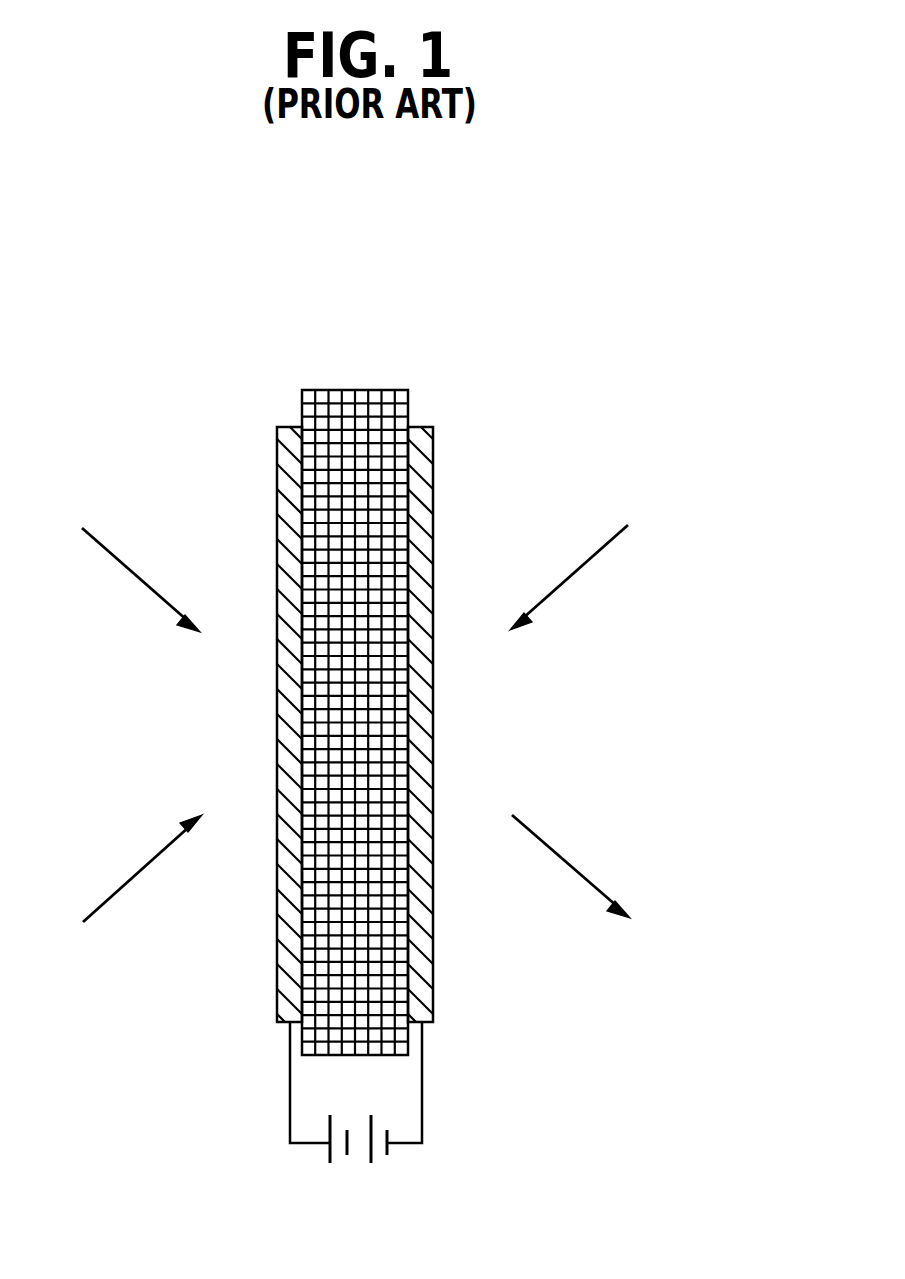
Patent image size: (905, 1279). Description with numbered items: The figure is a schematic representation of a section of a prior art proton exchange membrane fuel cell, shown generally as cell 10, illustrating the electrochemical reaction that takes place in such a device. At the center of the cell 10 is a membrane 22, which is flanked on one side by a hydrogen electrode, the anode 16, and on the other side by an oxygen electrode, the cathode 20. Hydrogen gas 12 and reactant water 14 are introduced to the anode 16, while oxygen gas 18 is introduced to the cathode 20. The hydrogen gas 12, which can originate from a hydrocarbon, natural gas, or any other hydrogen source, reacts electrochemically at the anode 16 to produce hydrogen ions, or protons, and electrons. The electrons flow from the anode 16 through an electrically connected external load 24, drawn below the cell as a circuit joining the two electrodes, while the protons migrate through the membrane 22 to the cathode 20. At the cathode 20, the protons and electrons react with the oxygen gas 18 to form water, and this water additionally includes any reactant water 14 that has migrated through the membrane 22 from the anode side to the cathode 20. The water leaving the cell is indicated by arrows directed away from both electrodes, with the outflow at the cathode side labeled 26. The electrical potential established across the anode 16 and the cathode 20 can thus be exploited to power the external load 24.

The cell 10 is at (475, 357).
The hydrogen gas 12 is at (140, 582).
The reactant water 14 is at (132, 878).
The hydrogen electrode (anode) 16 is at (277, 427).
The oxygen gas 18 is at (560, 588).
The oxygen electrode (cathode) 20 is at (433, 427).
The membrane 22 is at (361, 390).
The external load 24 is at (422, 1078).
The water byproduct at cathode 26 is at (567, 870).